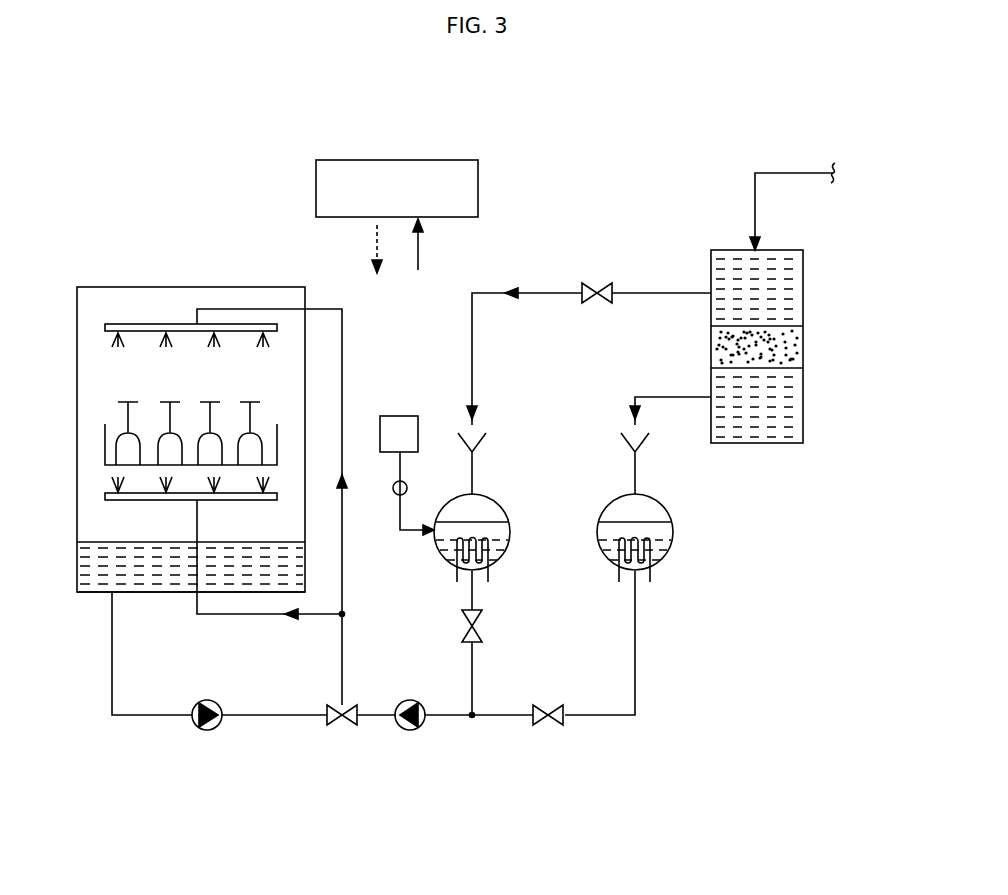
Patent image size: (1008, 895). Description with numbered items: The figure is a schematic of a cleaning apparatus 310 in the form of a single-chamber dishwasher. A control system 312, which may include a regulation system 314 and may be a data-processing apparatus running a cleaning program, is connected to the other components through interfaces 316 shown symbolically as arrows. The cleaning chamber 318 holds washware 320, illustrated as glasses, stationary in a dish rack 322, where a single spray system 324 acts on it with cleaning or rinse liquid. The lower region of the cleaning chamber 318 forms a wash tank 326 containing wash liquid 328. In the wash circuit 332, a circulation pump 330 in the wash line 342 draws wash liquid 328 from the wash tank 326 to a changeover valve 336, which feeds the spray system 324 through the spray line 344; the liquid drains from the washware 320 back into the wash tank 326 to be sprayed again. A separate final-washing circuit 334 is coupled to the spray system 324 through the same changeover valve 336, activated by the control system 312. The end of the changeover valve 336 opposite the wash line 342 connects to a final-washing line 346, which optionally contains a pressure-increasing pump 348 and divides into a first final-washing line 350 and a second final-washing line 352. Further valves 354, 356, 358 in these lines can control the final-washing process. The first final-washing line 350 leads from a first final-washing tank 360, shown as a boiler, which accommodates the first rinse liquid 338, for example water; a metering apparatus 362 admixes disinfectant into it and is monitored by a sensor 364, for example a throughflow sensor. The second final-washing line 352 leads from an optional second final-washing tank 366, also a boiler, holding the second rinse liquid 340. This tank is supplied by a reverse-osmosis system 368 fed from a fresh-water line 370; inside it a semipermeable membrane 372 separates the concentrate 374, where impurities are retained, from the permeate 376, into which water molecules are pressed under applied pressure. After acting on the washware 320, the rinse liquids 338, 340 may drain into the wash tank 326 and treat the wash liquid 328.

The cleaning apparatus 310 is at (229, 158).
The control system 312 is at (383, 202).
The regulation system 314 is at (437, 202).
The interfaces 316 is at (437, 248).
The cleaning chamber 318 is at (265, 286).
The washware 320 is at (168, 395).
The dish rack 322 is at (97, 438).
The spray system 324 is at (190, 323).
The wash tank 326 is at (88, 594).
The wash liquid 328 is at (163, 578).
The circulation pump 330 is at (207, 731).
The wash circuit 332 is at (238, 763).
The final-washing circuit 334 is at (662, 696).
The changeover valve 336 is at (340, 726).
The first rinse liquid 338 is at (507, 528).
The second rinse liquid 340 is at (671, 528).
The wash line 342 is at (285, 717).
The spray line 344 is at (343, 580).
The final-washing line 346 is at (455, 717).
The pressure-increasing pump 348 is at (410, 731).
The first final-washing line 350 is at (473, 335).
The second final-washing line 352 is at (673, 399).
The valve 354 is at (478, 626).
The valve 356 is at (548, 726).
The valve 358 is at (598, 282).
The first final-washing tank 360 is at (497, 556).
The metering apparatus 362 is at (395, 428).
The sensor 364 is at (392, 486).
The second final-washing tank 366 is at (662, 555).
The reverse-osmosis system 368 is at (718, 238).
The fresh-water line 370 is at (757, 205).
The membrane 372 is at (790, 348).
The concentrate 374 is at (790, 288).
The permeate 376 is at (790, 410).